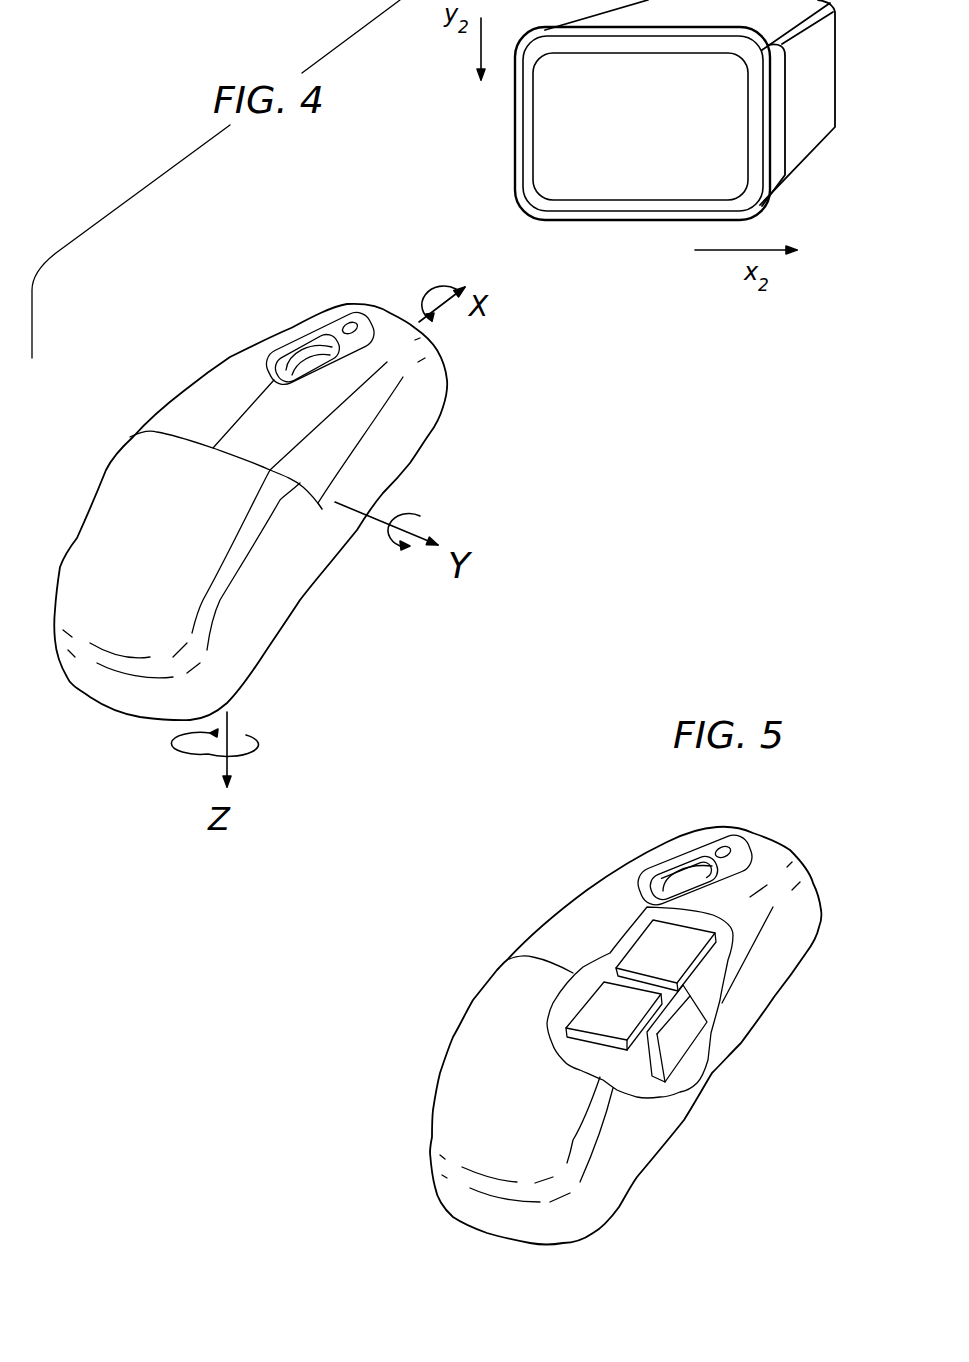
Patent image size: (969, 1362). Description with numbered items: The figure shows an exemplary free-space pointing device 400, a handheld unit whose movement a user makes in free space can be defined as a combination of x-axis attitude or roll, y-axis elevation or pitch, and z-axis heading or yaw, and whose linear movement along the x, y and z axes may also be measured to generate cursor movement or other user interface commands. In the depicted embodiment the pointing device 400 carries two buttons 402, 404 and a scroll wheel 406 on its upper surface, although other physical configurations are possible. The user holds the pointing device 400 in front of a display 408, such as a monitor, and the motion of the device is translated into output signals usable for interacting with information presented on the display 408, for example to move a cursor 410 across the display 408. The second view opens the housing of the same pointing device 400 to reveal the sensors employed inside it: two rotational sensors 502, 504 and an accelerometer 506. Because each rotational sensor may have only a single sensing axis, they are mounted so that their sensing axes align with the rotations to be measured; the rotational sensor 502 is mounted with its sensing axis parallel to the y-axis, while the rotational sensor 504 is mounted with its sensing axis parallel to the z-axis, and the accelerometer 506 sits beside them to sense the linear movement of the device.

In FIG. 4, the free-space pointing device 400 is at (180, 240).
In FIG. 5, the free-space pointing device 400 is at (552, 846).
In FIG. 4, the button 402 is at (215, 383).
In FIG. 5, the button 402 is at (590, 910).
In FIG. 4, the button 404 is at (383, 408).
In FIG. 4, the scroll wheel 406 is at (307, 353).
In FIG. 5, the scroll wheel 406 is at (682, 880).
In FIG. 4, the display 408 is at (770, 100).
In FIG. 4, the cursor 410 is at (690, 120).
In FIG. 5, the rotational sensor 502 is at (687, 947).
In FIG. 5, the rotational sensor 504 is at (688, 1042).
In FIG. 5, the accelerometer 506 is at (597, 1010).